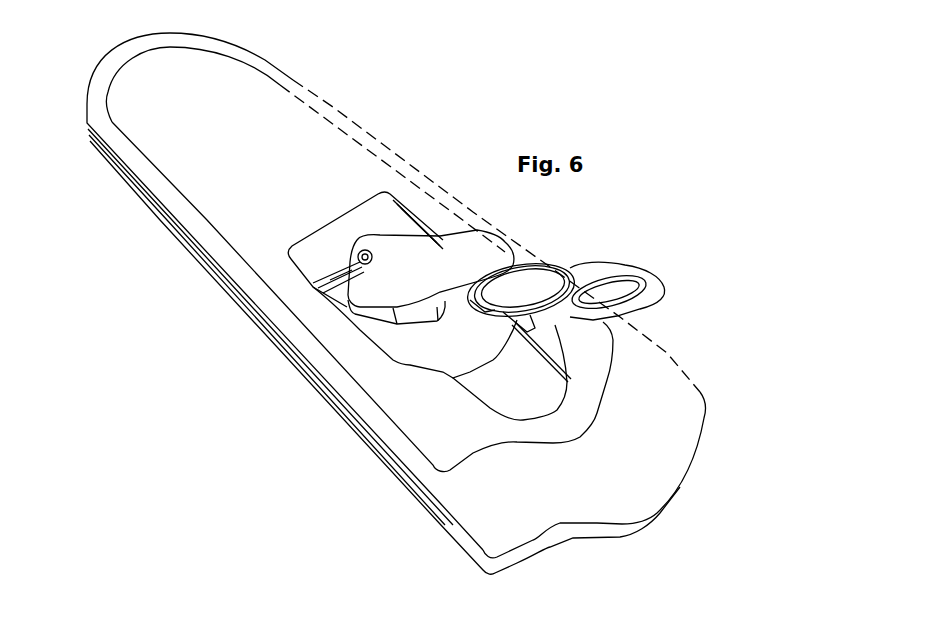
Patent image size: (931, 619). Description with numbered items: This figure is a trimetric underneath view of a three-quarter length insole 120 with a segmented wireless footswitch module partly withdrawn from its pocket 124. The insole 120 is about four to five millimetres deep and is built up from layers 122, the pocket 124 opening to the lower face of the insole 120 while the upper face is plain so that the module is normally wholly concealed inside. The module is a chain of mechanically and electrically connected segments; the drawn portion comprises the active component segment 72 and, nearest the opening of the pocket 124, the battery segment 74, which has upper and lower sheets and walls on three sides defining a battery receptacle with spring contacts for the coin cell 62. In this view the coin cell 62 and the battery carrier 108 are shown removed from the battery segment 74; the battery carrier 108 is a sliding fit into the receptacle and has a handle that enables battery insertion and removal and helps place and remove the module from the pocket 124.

The ¾ length insole 120 is at (335, 108).
The layers 122 is at (250, 312).
The pocket 124 is at (397, 360).
The active component segment 72 is at (361, 244).
The battery segment 74 is at (447, 284).
The coin cell 62 is at (533, 300).
The battery carrier 108 is at (645, 271).